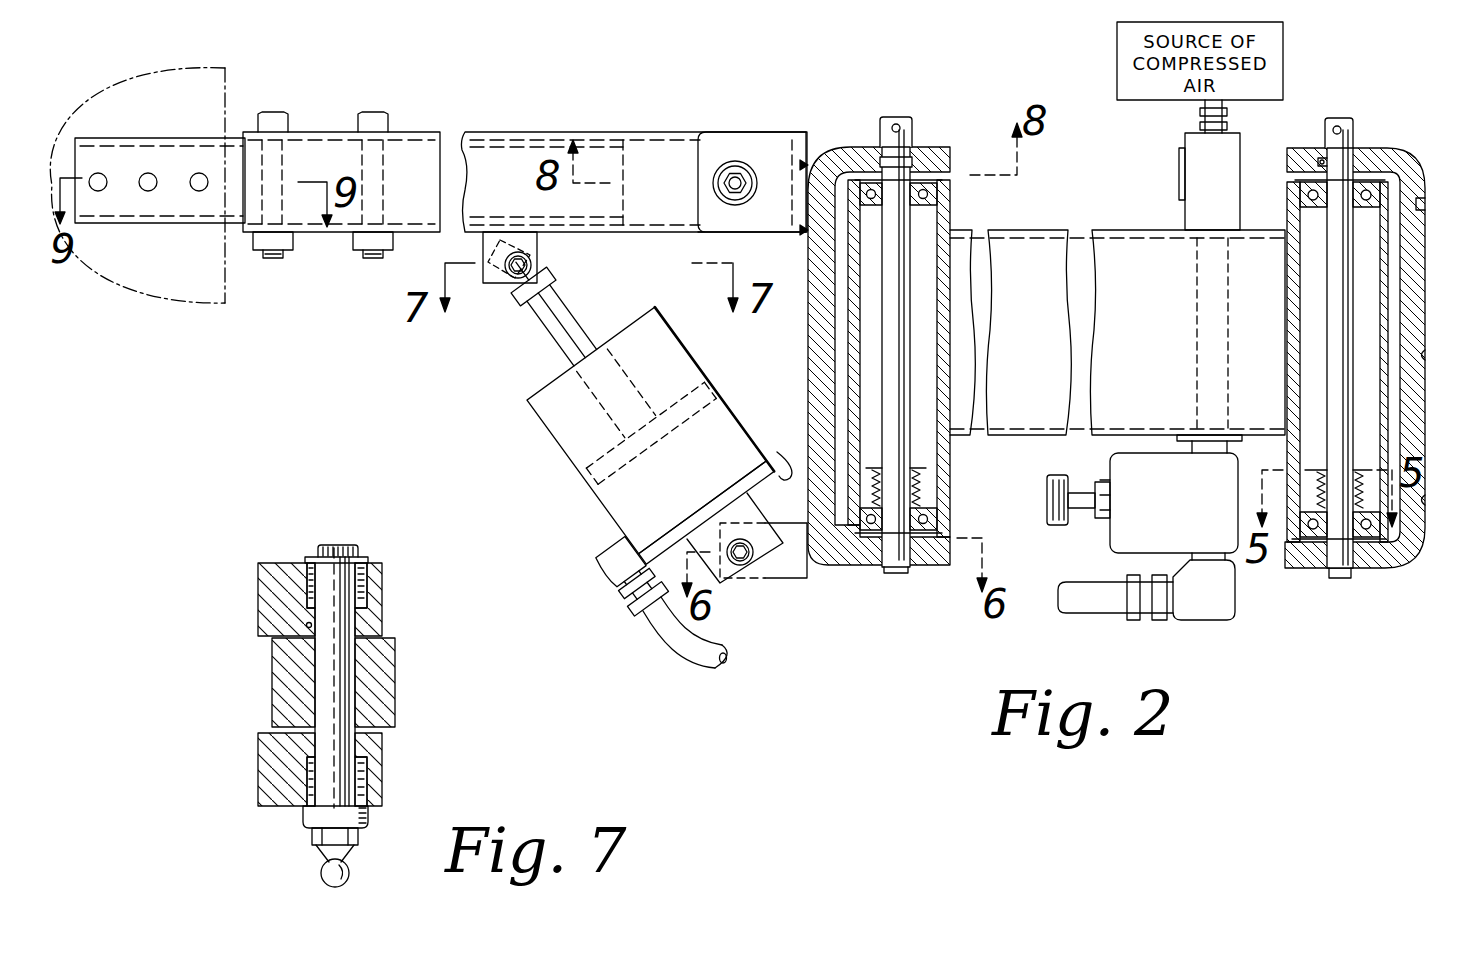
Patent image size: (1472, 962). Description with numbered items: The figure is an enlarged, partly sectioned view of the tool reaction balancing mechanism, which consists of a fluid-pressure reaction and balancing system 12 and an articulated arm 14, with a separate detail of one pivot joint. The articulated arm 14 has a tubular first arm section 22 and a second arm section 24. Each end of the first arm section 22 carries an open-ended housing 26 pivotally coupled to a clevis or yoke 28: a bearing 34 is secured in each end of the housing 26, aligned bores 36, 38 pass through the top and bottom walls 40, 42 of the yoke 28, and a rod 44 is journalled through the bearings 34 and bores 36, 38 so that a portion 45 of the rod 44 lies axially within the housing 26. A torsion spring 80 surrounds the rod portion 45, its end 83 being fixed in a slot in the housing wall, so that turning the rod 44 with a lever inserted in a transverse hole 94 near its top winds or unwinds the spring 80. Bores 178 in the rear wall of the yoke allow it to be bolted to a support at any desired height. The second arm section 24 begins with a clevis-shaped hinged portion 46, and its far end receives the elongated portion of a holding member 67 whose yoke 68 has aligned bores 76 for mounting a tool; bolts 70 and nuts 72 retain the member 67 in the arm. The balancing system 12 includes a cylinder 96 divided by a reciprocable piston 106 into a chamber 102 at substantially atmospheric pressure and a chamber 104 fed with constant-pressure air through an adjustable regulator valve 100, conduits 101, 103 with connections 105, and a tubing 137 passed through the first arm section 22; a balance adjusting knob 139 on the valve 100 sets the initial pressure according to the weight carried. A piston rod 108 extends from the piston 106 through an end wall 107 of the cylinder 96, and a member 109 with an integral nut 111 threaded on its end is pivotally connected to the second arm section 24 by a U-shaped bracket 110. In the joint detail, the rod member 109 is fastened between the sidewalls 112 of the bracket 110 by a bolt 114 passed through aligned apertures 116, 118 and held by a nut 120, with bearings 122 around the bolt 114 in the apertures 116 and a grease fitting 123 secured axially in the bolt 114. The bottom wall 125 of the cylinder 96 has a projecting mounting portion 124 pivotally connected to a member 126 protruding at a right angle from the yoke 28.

In FIG. 2, the fluid-pressure reaction and balancing system 12 is at (554, 466).
In FIG. 2, the articulated arm 14 is at (1022, 230).
In FIG. 2, the first arm section 22 is at (1094, 230).
In FIG. 2, the second arm section 24 is at (490, 132).
In FIG. 2, the housing 26 is at (951, 328).
In FIG. 2, the clevis or yoke 28 is at (818, 310).
In FIG. 2, the bearing 34 is at (930, 200).
In FIG. 2, the bore 36 is at (1318, 162).
In FIG. 2, the bore 38 is at (892, 575).
In FIG. 2, the top wall 40 is at (845, 158).
In FIG. 2, the bottom wall 42 is at (936, 570).
In FIG. 2, the rod 44 is at (908, 135).
In FIG. 2, the rod portion 45 is at (906, 290).
In FIG. 2, the hinged portion 46 is at (765, 148).
In FIG. 2, the holding means member 67 is at (175, 136).
In FIG. 2, the yoke 68 is at (120, 152).
In FIG. 2, the bolt 70 is at (275, 118).
In FIG. 2, the nut 72 is at (372, 248).
In FIG. 2, the bore 76 is at (150, 190).
In FIG. 2, the torsion spring 80 is at (925, 490).
In FIG. 2, the spring end 83 is at (924, 470).
In FIG. 2, the transverse hole 94 is at (897, 124).
In FIG. 2, the cylinder 96 is at (616, 388).
In FIG. 2, the adjustable regulator valve 100 is at (1118, 562).
In FIG. 2, the conduit 101 is at (1205, 126).
In FIG. 2, the chamber 102 is at (660, 345).
In FIG. 2, the conduit 103 is at (670, 640).
In FIG. 2, the chamber 104 is at (706, 512).
In FIG. 2, the connection 105 is at (603, 560).
In FIG. 2, the piston 106 is at (626, 399).
In FIG. 2, the end wall 107 is at (545, 388).
In FIG. 2, the piston rod 108 is at (562, 325).
In FIG. 2, the piston rod member 109 is at (533, 286).
In FIG. 2, the U-shaped bracket 110 is at (492, 284).
In FIG. 7, the U-shaped bracket 110 is at (305, 697).
In FIG. 2, the integral nut 111 is at (550, 309).
In FIG. 7, the sidewall 112 is at (268, 582).
In FIG. 7, the bolt 114 is at (322, 543).
In FIG. 7, the aperture 116 is at (305, 625).
In FIG. 7, the aperture 118 is at (325, 674).
In FIG. 7, the nut 120 is at (307, 559).
In FIG. 7, the bearing 122 is at (366, 588).
In FIG. 7, the grease fitting 123 is at (327, 873).
In FIG. 2, the mounting portion 124 is at (718, 582).
In FIG. 2, the bottom wall 125 is at (782, 452).
In FIG. 2, the protruding member 126 is at (803, 580).
In FIG. 2, the tubing 137 is at (1197, 312).
In FIG. 2, the balance adjusting knob 139 is at (1057, 526).
In FIG. 2, the bore 178 is at (1425, 203).